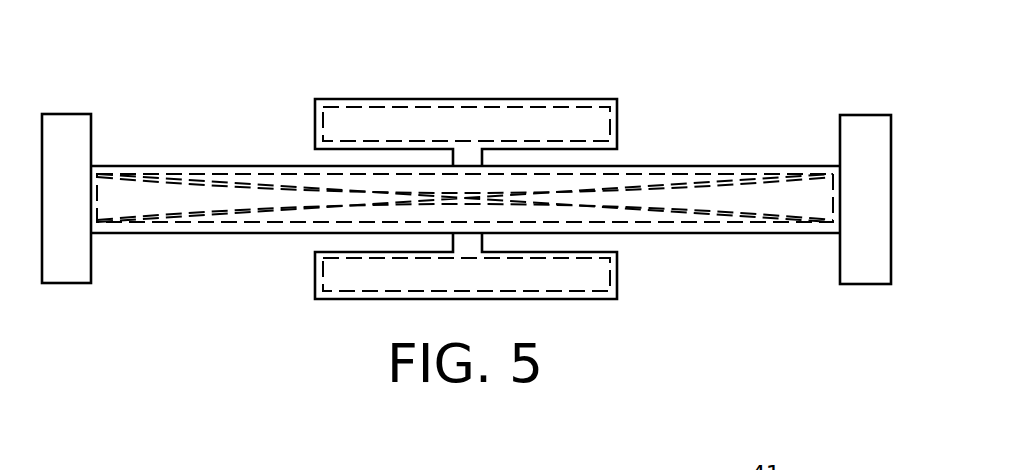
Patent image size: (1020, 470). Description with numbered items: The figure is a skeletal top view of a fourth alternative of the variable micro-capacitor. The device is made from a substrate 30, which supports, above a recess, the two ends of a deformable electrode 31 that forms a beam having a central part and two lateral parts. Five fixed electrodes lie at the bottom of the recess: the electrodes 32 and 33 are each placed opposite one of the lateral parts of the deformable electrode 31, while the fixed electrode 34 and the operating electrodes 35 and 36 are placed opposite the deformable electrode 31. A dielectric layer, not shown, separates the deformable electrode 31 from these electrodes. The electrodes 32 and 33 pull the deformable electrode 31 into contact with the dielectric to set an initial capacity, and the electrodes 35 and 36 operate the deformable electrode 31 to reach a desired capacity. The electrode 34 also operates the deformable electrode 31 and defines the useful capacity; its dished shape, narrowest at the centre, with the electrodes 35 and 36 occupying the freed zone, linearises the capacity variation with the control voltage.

The substrate 30 is at (62, 275).
The deformable electrode 31 is at (700, 223).
The electrode 32 is at (394, 106).
The electrode 33 is at (593, 283).
The fixed electrode 34 is at (171, 190).
The operating electrode 35 is at (513, 175).
The operating electrode 36 is at (387, 220).